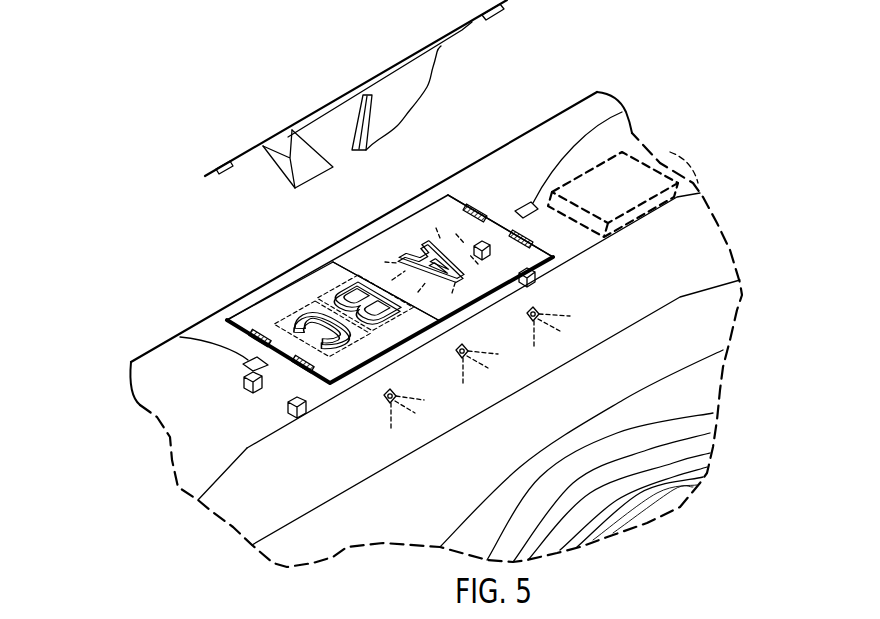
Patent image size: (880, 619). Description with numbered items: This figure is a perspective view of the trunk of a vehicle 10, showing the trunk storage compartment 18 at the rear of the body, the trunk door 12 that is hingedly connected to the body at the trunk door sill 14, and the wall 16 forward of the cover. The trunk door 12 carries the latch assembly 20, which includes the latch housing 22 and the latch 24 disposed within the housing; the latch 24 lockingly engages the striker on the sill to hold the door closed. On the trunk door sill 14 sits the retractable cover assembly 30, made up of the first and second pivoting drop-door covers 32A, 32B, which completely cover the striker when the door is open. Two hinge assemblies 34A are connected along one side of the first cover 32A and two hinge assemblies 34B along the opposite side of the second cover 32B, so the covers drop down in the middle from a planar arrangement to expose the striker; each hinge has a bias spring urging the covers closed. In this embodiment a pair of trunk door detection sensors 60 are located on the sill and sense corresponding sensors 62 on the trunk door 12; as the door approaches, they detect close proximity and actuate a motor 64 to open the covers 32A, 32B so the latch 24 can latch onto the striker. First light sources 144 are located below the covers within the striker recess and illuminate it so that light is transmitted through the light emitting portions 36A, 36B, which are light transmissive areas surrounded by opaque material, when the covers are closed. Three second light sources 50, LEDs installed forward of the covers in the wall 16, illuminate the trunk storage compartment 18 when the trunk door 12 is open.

The automotive vehicle 10 is at (122, 209).
The trunk door 12 is at (470, 25).
The trunk door sill 14 is at (530, 156).
The wall 16 is at (700, 240).
The trunk storage compartment 18 is at (692, 400).
The latch assembly 20 is at (249, 208).
The latch housing 22 is at (280, 163).
The latch 24 is at (352, 142).
The retractable cover assembly 30 is at (267, 293).
The first pivoting drop-door cover 32A is at (447, 197).
The second pivoting drop-door cover 32B is at (333, 263).
The hinge assemblies 34A is at (478, 206).
The hinge assemblies 34B is at (297, 358).
The light emitting portion 36A is at (423, 247).
The light emitting portion 36B is at (327, 292).
The second light sources 50 is at (464, 351).
The trunk door detection sensors 60 is at (622, 112).
The trunk door detection sensors 62 is at (231, 167).
The motor 64 is at (683, 150).
The first light sources 144 is at (482, 240).